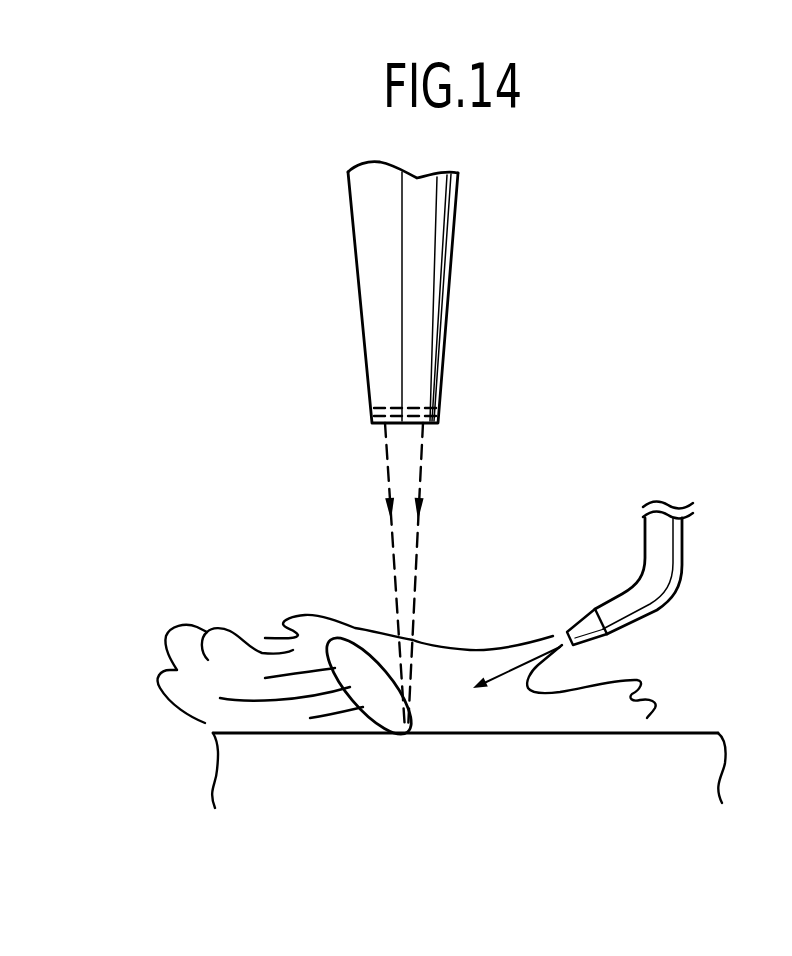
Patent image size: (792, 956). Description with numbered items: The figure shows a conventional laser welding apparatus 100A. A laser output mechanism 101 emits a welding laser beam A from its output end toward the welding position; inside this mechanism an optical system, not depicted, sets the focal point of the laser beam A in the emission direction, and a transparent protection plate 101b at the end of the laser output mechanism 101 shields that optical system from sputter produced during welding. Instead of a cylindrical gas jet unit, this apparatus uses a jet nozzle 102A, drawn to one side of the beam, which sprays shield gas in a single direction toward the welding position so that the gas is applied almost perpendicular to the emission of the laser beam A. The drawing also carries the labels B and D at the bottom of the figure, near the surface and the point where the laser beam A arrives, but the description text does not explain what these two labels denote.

The laser welding apparatus 100A is at (608, 236).
The laser output mechanism 101 is at (358, 273).
The transparent protection plate 101b is at (354, 403).
The jet nozzle 102A is at (683, 573).
The welding laser beam A is at (418, 562).
The workpiece B is at (575, 763).
The processing spot D is at (373, 728).